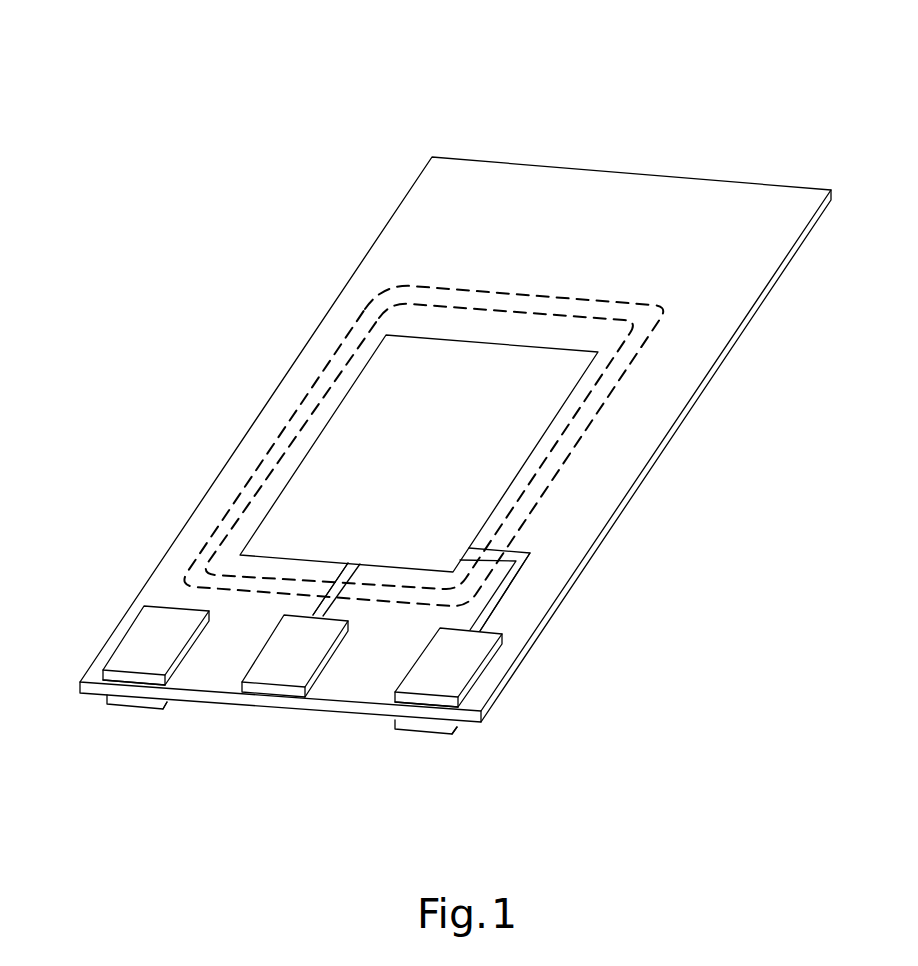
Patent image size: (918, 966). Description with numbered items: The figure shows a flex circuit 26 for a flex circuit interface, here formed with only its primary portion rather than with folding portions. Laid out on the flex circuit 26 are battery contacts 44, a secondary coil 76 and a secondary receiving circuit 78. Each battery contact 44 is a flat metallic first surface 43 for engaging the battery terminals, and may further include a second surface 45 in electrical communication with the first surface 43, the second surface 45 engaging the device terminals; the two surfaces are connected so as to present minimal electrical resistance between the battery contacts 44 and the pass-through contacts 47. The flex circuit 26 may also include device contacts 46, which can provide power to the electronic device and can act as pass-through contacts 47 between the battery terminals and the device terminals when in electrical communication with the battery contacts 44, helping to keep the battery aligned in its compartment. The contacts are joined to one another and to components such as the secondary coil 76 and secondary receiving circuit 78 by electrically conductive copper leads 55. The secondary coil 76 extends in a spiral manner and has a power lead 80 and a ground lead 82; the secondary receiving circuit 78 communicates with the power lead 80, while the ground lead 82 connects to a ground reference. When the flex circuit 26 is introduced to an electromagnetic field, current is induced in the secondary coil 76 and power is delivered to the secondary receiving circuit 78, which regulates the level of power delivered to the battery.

The flex circuit 26 is at (344, 105).
The first surface 43 is at (155, 638).
The battery contact 44 is at (118, 655).
The second surface 45 is at (128, 708).
The device contact 46 is at (117, 707).
The pass-through contact 47 is at (107, 675).
The electrically conductive copper lead 55 is at (523, 562).
The secondary coil 76 is at (595, 296).
The secondary receiving circuit 78 is at (482, 343).
The power lead 80 is at (327, 597).
The ground lead 82 is at (508, 588).